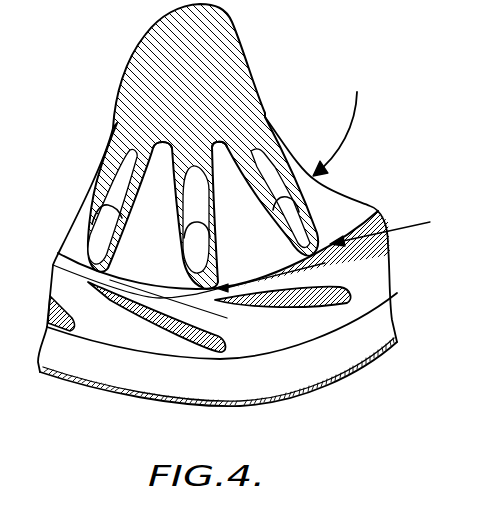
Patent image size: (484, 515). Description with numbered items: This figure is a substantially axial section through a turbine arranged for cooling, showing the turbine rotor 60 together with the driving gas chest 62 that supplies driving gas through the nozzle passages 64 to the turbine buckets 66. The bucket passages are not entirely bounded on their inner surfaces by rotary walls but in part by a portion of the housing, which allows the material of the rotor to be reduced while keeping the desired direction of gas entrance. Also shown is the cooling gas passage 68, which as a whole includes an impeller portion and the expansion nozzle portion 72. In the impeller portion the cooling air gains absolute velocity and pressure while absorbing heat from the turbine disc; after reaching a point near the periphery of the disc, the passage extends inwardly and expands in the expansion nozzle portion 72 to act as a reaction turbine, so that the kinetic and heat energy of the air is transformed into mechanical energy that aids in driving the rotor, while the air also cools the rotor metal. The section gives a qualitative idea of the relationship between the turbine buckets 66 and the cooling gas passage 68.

The turbine rotor 60 is at (118, 85).
The driving gas chest 62 is at (211, 388).
The nozzle passages 64 is at (83, 300).
The turbine buckets 66 is at (156, 184).
The cooling gas passage 68 is at (105, 222).
The expansion nozzle portion 72 is at (66, 165).